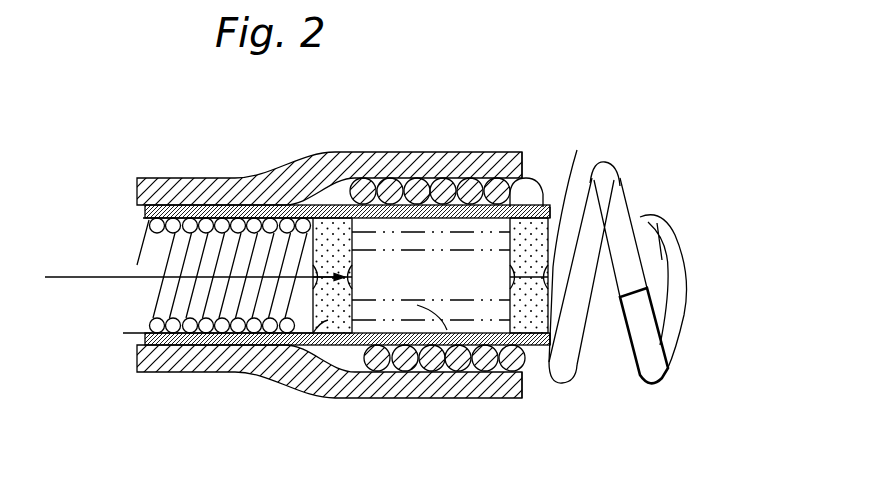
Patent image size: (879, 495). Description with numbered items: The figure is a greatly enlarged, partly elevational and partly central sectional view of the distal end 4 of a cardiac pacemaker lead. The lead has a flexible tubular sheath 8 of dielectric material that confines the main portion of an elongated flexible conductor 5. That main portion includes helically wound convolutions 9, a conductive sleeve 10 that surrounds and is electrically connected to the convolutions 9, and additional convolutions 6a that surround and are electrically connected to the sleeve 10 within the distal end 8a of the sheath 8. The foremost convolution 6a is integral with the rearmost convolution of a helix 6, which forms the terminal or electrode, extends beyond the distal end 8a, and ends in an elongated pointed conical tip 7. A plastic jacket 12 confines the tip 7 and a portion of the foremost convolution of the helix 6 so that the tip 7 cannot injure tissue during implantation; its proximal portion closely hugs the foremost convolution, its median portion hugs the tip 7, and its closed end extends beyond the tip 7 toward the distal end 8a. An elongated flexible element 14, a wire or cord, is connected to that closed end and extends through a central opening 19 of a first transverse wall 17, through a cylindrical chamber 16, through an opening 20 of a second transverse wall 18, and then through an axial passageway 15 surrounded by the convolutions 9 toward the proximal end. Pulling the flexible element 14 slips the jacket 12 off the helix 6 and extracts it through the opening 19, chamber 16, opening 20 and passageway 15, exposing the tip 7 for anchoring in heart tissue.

The distal end 4 is at (538, 142).
The elongated flexible conductor 5 is at (626, 164).
The helix 6 is at (584, 282).
The additional convolutions 6a is at (396, 180).
The pointed conical tip 7 is at (680, 265).
The flexible tubular sheath 8 is at (212, 168).
The distal end of the sheath 8a is at (505, 152).
The helically wound convolutions 9 is at (150, 224).
The conductive sleeve 10 is at (228, 210).
The jacket 12 is at (680, 240).
The elongated flexible element 14 is at (548, 275).
The axial passageway 15 is at (178, 300).
The cylindrical chamber 16 is at (448, 250).
The first transverse wall 17 is at (531, 320).
The second transverse wall 18 is at (292, 372).
The central opening 19 is at (559, 241).
The opening 20 is at (312, 272).